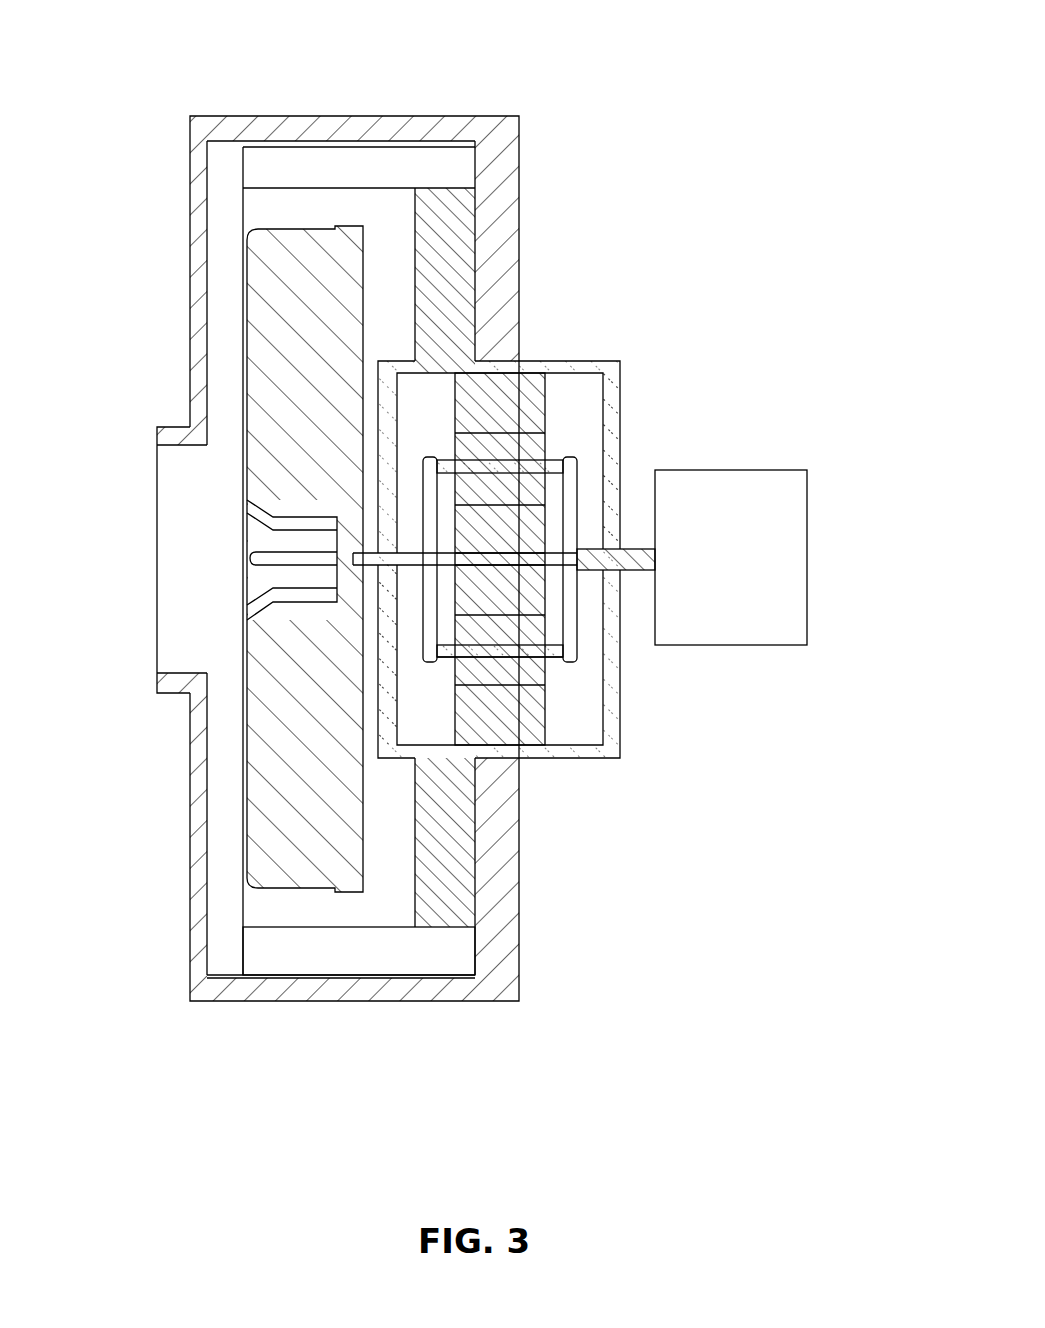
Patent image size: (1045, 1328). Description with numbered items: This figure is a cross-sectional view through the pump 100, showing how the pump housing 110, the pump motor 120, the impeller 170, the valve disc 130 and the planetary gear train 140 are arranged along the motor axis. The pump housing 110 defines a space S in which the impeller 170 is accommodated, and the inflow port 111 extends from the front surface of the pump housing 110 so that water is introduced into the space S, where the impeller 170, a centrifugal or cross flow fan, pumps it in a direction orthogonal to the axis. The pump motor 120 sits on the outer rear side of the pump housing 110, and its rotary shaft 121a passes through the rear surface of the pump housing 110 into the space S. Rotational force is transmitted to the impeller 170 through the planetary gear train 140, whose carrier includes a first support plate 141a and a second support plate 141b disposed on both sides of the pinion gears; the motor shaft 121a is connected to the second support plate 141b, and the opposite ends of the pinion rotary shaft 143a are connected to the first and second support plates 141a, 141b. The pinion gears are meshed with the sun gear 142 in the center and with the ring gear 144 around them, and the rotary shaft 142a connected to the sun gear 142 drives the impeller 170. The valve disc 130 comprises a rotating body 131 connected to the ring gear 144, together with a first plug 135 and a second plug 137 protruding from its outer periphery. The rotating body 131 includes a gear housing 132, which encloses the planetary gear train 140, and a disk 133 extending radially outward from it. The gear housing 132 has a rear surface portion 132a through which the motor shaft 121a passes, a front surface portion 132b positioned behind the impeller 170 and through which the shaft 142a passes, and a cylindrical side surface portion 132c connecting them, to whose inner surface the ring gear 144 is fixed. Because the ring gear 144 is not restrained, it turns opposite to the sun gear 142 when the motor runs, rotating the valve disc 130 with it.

The pump 100 is at (97, 32).
The pump housing 110 is at (450, 119).
The inflow port 111 is at (178, 527).
The pump motor 120 is at (784, 513).
The output shaft 121a is at (633, 553).
The valve disc 130 is at (435, 212).
The rotating body 131 is at (667, 202).
The gear housing 132 is at (611, 403).
The rear surface portion 132a is at (609, 457).
The front surface portion 132b is at (388, 692).
The side surface portion 132c is at (497, 370).
The disk 133 is at (444, 266).
The first plug 135 is at (444, 172).
The second plug 137 is at (358, 945).
The planetary gear train 140 is at (562, 719).
The first support plate 141a is at (433, 620).
The second support plate 141b is at (570, 588).
The sun gear 142 is at (477, 592).
The rotary shaft 142a is at (336, 558).
The rotary shaft 143a is at (467, 660).
The ring gear 144 is at (514, 403).
The impeller 170 is at (283, 305).
The space S is at (219, 583).